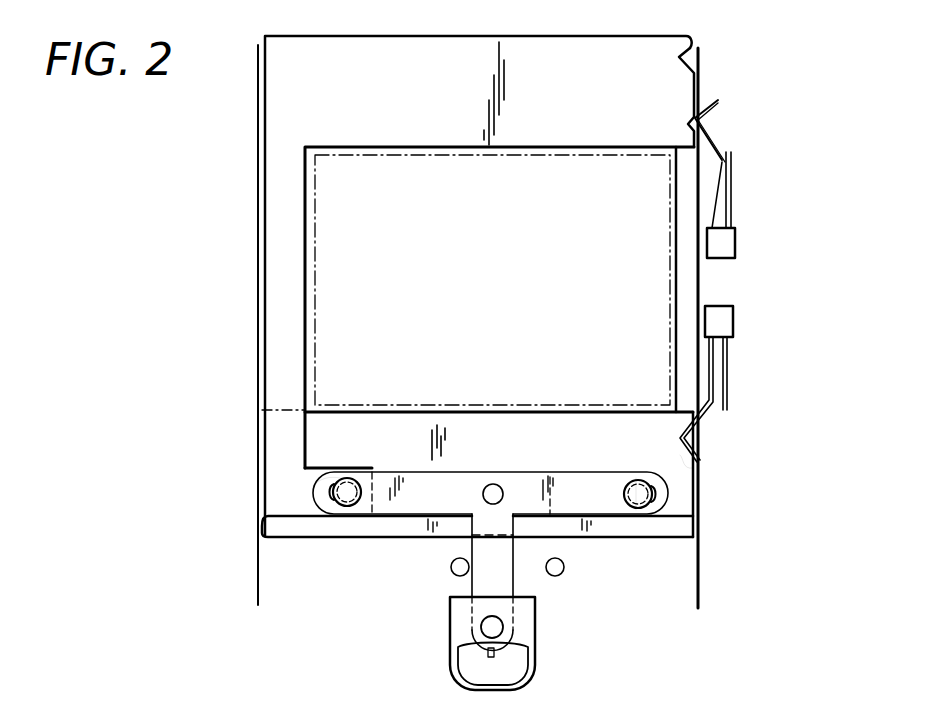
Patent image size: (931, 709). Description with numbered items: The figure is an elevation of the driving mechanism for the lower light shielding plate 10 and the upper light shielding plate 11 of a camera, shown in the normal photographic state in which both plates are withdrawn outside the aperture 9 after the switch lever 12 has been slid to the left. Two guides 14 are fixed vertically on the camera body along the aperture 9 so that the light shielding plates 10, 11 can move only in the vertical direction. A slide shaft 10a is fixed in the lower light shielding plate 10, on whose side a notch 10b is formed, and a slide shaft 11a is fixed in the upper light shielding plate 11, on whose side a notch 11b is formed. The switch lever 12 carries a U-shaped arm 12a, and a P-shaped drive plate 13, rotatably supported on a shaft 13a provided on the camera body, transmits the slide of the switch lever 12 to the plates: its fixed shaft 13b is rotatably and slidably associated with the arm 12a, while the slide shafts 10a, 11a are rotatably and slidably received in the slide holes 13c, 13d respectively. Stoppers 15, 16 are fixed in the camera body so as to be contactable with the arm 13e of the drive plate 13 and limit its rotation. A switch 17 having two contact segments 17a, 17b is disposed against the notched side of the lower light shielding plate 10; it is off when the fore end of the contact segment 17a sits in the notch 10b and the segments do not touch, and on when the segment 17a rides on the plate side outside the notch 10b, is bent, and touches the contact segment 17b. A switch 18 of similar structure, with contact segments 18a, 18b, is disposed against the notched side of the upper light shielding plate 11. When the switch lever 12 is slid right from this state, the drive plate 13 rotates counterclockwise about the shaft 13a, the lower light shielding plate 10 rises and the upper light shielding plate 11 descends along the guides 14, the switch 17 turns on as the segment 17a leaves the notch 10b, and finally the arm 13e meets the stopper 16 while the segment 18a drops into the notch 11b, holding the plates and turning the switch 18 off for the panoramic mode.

The aperture 9 is at (400, 150).
The lower light shielding plate 10 is at (692, 532).
The slide shaft 10a is at (640, 506).
The notch 10b is at (692, 465).
The upper light shielding plate 11 is at (555, 45).
The slide shaft 11a is at (352, 508).
The notch 11b is at (690, 36).
The switch lever 12 is at (526, 680).
The U-shaped arm 12a is at (468, 640).
The drive plate 13 is at (590, 504).
The shaft 13a is at (493, 484).
The fixed shaft 13b is at (498, 628).
The slide hole 13c is at (652, 508).
The slide hole 13d is at (333, 500).
The arm 13e is at (505, 568).
The guides 14 is at (258, 220).
The stopper 15 is at (457, 573).
The stopper 16 is at (557, 575).
The switch 17 is at (733, 330).
The contact segment 17a is at (700, 440).
The contact segment 17b is at (728, 392).
The switch 18 is at (735, 246).
The contact segment 18a is at (716, 131).
The contact segment 18b is at (733, 200).